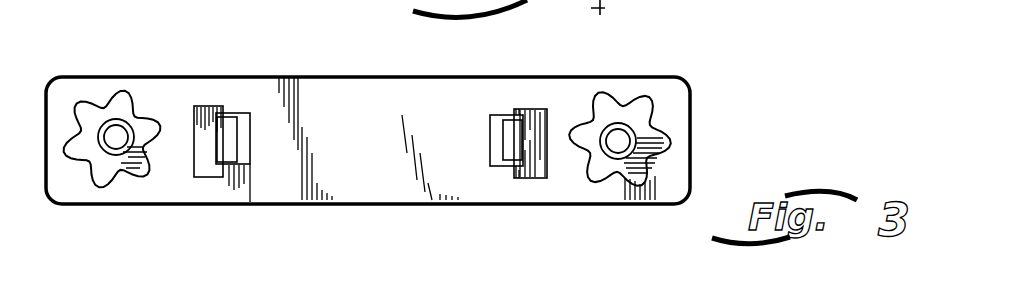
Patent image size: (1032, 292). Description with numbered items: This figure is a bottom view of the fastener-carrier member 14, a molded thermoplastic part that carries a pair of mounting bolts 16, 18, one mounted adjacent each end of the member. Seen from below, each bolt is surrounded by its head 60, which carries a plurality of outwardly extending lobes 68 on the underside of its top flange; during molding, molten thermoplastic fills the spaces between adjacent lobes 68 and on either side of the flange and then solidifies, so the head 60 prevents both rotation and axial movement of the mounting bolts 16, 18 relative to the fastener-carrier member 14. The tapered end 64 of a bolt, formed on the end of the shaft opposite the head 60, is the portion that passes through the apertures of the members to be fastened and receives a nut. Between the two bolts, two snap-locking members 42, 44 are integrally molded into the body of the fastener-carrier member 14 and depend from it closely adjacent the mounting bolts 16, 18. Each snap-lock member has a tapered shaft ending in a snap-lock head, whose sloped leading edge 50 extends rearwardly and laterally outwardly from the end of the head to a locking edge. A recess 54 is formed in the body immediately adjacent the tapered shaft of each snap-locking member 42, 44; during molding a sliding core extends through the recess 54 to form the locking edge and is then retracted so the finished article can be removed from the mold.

The fastener-carrier member 14 is at (826, 66).
The mounting bolt 16 is at (129, 122).
The mounting bolt 18 is at (648, 128).
The snap-locking member 42 is at (250, 135).
The snap-locking member 44 is at (500, 148).
The sloped leading edge 50 is at (229, 128).
The recess 54 is at (247, 157).
The head 60 is at (170, 124).
The tapered end 64 is at (219, 11).
The lobes 68 is at (73, 102).